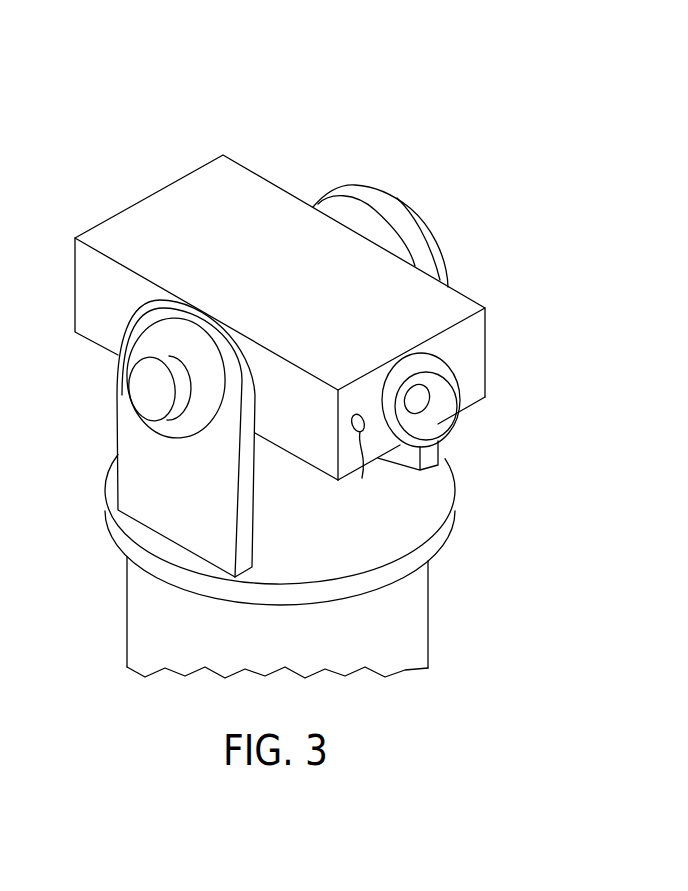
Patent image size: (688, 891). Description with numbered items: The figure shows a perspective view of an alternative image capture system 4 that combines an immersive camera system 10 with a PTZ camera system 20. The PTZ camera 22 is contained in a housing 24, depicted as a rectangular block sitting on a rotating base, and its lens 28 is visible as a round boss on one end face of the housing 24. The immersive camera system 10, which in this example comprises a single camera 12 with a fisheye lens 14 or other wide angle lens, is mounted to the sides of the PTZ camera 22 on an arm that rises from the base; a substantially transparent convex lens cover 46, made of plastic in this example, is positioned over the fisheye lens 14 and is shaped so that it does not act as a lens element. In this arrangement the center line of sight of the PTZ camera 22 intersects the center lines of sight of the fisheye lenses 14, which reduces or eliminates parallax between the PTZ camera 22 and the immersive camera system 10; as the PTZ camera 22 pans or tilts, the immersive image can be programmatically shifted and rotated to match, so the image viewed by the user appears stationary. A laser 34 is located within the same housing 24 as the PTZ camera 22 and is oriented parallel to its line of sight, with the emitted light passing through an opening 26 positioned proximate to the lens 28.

The image capture system 4 is at (128, 113).
The immersive camera system 10 is at (96, 399).
The camera 12 is at (184, 414).
The fisheye lens 14 is at (135, 385).
The PTZ camera system 20 is at (330, 150).
The PTZ camera 22 is at (452, 385).
The housing 24 is at (280, 272).
The opening 26 is at (377, 468).
The lens 28 is at (430, 410).
The laser 34 is at (352, 426).
The lens cover 46 is at (163, 437).